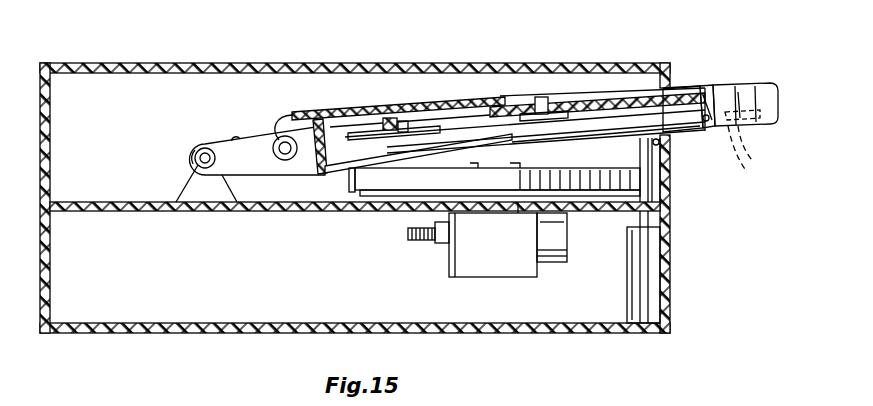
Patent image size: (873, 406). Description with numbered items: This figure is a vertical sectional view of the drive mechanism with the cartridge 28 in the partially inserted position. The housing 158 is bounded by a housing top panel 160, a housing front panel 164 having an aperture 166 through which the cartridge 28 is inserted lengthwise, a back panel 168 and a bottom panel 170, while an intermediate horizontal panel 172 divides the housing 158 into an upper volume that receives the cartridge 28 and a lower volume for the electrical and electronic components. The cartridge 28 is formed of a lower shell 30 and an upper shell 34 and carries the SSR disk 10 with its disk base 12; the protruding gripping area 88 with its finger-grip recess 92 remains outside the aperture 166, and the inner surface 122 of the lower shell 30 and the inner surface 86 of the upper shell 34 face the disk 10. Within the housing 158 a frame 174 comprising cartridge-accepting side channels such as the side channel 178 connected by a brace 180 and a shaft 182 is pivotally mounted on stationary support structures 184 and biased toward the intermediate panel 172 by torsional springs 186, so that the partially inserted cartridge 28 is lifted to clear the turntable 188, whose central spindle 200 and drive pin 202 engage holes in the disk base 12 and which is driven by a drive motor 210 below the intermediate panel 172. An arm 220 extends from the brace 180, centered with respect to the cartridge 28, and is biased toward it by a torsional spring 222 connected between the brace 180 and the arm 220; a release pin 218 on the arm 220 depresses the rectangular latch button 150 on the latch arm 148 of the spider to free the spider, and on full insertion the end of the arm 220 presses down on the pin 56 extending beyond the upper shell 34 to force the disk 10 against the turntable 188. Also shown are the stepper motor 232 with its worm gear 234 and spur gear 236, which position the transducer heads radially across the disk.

The SSR disk 10 is at (612, 144).
The disk base 12 is at (683, 134).
The cartridge 28 is at (708, 82).
The lower shell 30 is at (745, 133).
The upper shell 34 is at (737, 84).
The pin 56 is at (546, 88).
The inner surface of the upper shell 86 is at (686, 89).
The protruding gripping area 88 is at (757, 90).
The finger-grip recess 92 is at (748, 170).
The inner surface of the lower shell 122 is at (707, 118).
The latch arm 148 is at (393, 122).
The latch button 150 is at (424, 132).
The housing 158 is at (583, 61).
The housing top panel 160 is at (173, 63).
The housing front panel 164 is at (668, 276).
The aperture 166 is at (670, 90).
The back panel 168 is at (38, 323).
The bottom panel 170 is at (135, 333).
The intermediate horizontal panel 172 is at (113, 211).
The frame 174 is at (255, 131).
The side channel 178 is at (527, 107).
The brace 180 is at (286, 150).
The shaft 182 is at (200, 152).
The stationary support structure 184 is at (182, 186).
The torsional spring 186 is at (236, 139).
The turntable 188 is at (378, 187).
The central spindle 200 is at (518, 168).
The drive pin 202 is at (470, 167).
The drive motor 210 is at (515, 268).
The release pin 218 is at (406, 124).
The arm 220 is at (486, 100).
The torsional spring 222 is at (288, 118).
The stepper motor 232 is at (563, 263).
The worm gear 234 is at (443, 244).
The spur gear 236 is at (412, 238).